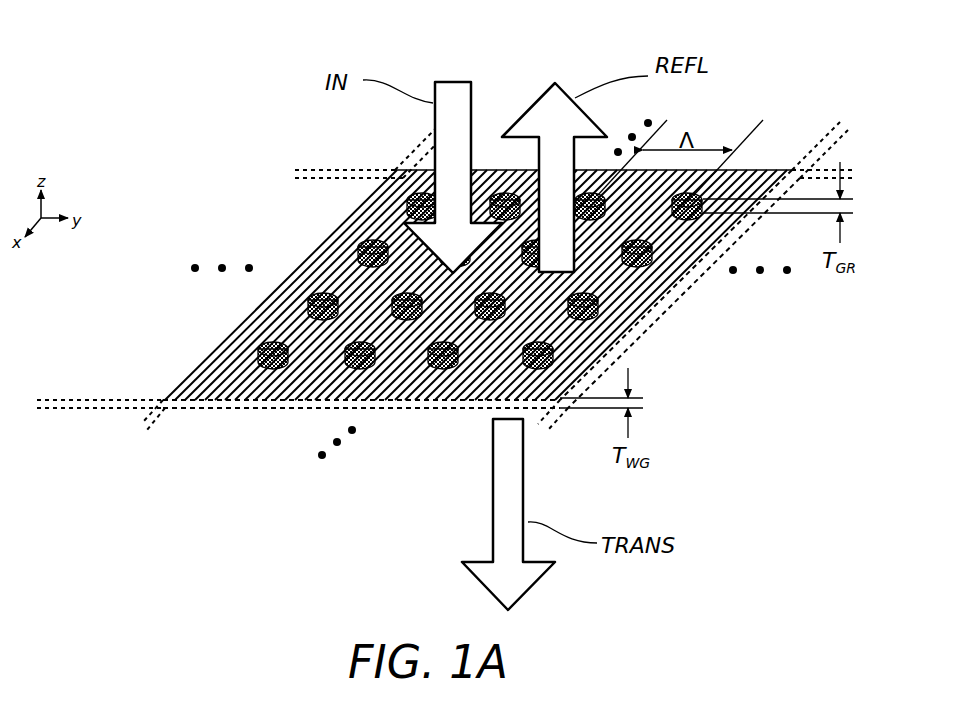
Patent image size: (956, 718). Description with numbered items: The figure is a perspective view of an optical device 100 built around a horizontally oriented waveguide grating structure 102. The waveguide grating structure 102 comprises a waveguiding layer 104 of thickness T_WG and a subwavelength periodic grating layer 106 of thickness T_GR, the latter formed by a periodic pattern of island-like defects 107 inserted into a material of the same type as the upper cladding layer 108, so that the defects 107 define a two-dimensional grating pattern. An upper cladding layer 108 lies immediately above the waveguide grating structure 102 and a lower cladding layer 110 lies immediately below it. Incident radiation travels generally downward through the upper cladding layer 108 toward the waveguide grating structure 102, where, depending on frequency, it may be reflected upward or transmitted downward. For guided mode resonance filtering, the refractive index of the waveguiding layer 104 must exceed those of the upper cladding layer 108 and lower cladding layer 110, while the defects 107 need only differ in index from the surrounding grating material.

The optical device 100 is at (142, 69).
The waveguide grating structure 102 is at (525, 289).
The waveguiding layer 104 is at (692, 276).
The subwavelength periodic grating layer 106 is at (645, 270).
The defects 107 is at (555, 353).
The upper cladding layer 108 is at (441, 237).
The lower cladding layer 110 is at (299, 444).